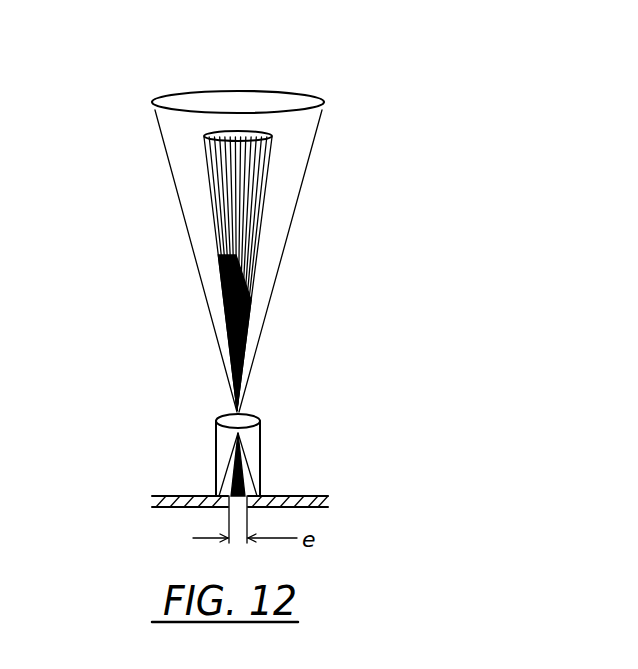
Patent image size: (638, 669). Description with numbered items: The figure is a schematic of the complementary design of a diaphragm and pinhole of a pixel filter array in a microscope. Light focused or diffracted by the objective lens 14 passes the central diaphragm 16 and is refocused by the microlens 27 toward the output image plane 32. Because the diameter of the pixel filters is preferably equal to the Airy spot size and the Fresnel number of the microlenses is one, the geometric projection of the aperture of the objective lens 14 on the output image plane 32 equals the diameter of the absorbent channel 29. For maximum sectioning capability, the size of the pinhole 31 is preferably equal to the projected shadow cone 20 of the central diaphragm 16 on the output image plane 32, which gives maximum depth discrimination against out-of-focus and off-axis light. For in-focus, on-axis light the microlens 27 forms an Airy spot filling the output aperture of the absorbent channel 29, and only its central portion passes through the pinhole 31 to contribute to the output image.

The objective lens 14 is at (300, 104).
The central diaphragm 16 is at (218, 136).
The shadow cone 20 is at (229, 227).
The microlens 27 is at (222, 419).
The absorbent channel 29 is at (216, 445).
The pinhole 31 is at (233, 517).
The output image plane 32 is at (152, 498).